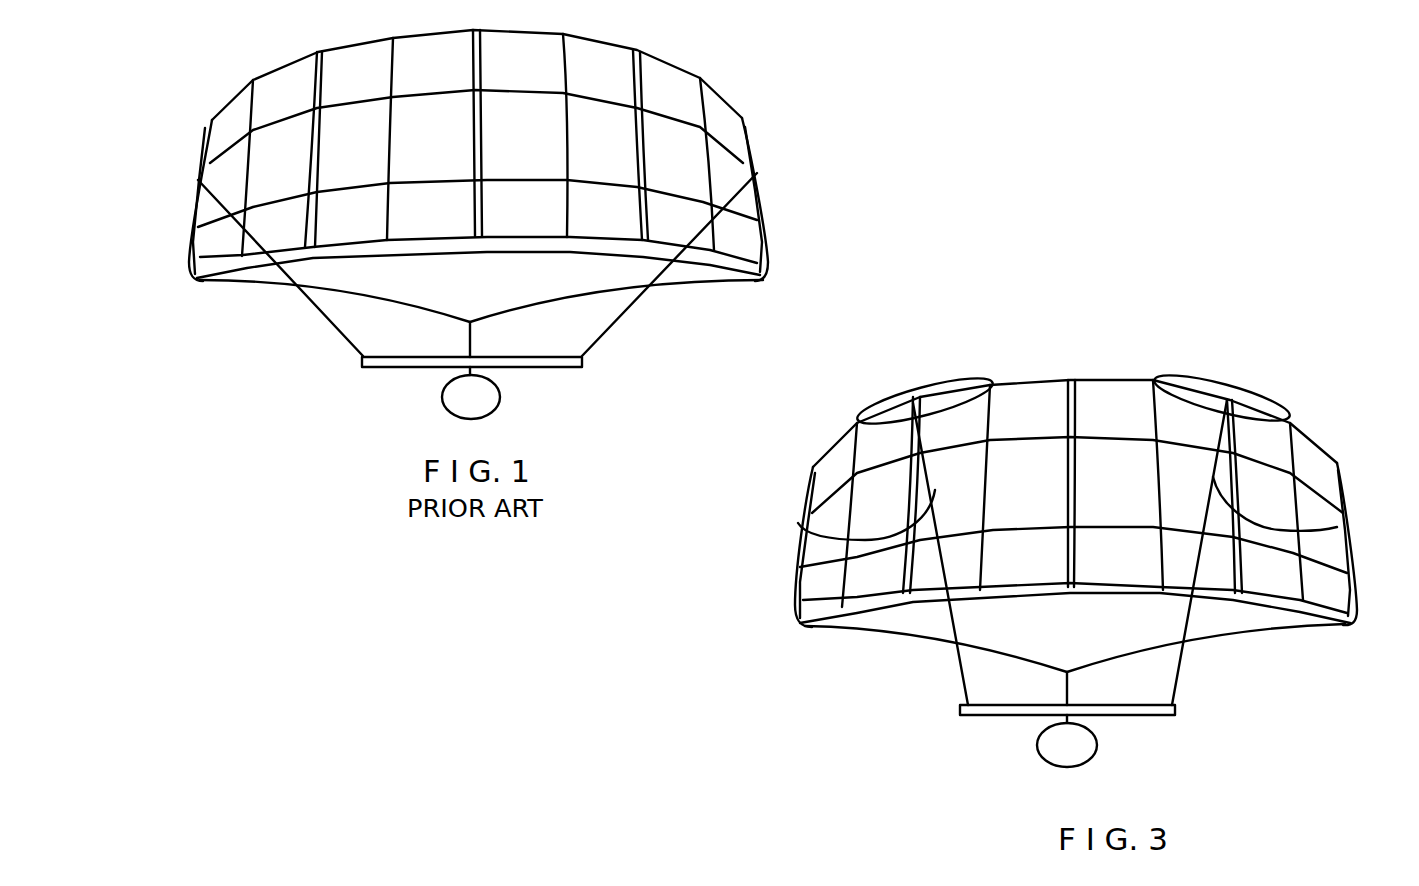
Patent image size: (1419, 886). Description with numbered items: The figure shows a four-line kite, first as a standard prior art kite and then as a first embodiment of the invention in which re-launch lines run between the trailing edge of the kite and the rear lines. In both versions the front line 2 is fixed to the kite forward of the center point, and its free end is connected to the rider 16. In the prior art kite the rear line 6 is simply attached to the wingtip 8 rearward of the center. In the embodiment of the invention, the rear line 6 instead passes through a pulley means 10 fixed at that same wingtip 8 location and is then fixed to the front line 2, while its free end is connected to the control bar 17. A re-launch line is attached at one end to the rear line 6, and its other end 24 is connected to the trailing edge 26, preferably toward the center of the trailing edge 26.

In FIG. 1, the front line 2 is at (267, 285).
In FIG. 3, the front line 2 is at (920, 632).
In FIG. 1, the rear line 6 is at (322, 313).
In FIG. 3, the rear line 6 is at (960, 667).
In FIG. 3, the wingtip 8 is at (790, 577).
In FIG. 3, the pulley means 10 is at (803, 527).
In FIG. 3, the rider 16 is at (1097, 745).
In FIG. 3, the control bar 17 is at (1012, 715).
In FIG. 3, the other end of re-launch line 24 is at (921, 392).
In FIG. 3, the trailing edge 26 is at (1026, 379).